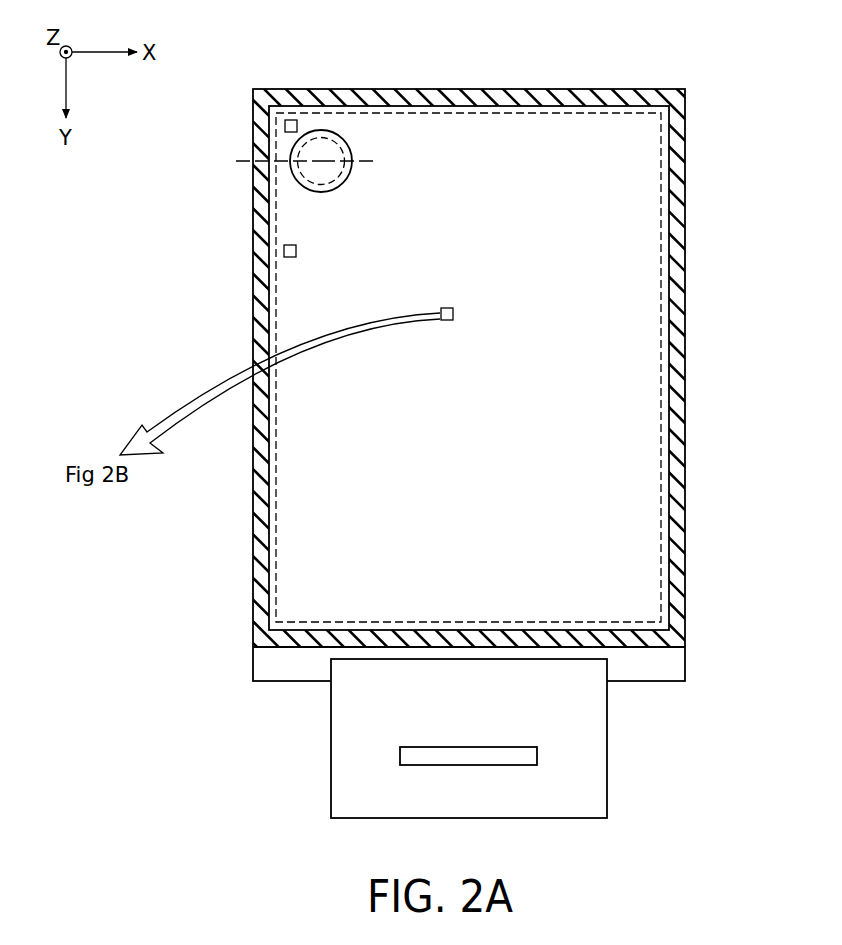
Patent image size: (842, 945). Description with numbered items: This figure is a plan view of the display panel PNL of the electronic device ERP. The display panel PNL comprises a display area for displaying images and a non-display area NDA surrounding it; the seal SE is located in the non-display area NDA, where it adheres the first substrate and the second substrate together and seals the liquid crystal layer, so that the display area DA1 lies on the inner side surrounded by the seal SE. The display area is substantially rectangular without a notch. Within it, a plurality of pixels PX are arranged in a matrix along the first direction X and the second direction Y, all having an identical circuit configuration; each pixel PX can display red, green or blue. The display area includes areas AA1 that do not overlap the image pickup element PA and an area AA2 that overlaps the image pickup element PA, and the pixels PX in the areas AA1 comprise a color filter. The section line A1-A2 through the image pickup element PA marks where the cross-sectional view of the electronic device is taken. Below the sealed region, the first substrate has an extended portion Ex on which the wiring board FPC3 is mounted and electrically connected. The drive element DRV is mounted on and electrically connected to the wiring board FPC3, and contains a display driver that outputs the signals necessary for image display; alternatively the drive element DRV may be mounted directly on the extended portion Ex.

The electronic apparatus / display device ERP is at (512, 342).
The display panel PNL is at (698, 97).
The non-display area NDA is at (421, 348).
The seal SE is at (530, 98).
The first display area DA1 is at (481, 112).
The area AA1 is at (468, 322).
The area AA2 is at (347, 138).
The image pickup element PA is at (322, 131).
The pixel PX is at (290, 120).
The line A1-A2 A1 is at (262, 162).
The line A1- A2 is at (364, 162).
The extended portion Ex is at (281, 668).
The wiring board FPC3 is at (587, 737).
The drive element DRV is at (430, 766).